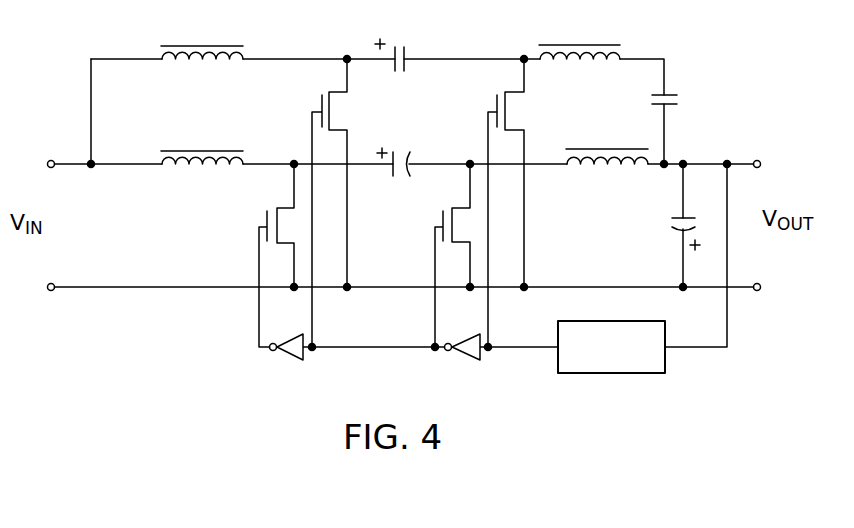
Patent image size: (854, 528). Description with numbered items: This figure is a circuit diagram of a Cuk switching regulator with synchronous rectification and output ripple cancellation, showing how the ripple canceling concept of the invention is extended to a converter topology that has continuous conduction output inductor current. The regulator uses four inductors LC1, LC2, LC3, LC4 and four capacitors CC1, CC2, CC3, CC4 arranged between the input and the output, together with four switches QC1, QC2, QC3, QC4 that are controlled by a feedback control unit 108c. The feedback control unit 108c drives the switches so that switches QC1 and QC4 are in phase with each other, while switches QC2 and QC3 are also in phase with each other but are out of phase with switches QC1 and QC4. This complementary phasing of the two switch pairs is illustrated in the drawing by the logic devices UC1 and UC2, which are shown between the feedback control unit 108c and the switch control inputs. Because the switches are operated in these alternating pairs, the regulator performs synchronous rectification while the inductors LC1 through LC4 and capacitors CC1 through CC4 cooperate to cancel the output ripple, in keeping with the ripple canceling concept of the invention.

The feedback control unit 108c is at (637, 318).
The inductor LC1 is at (202, 174).
The inductor LC2 is at (607, 173).
The inductor LC3 is at (202, 70).
The inductor LC4 is at (579, 69).
The capacitor CC1 is at (400, 178).
The capacitor CC2 is at (662, 225).
The capacitor CC3 is at (396, 71).
The capacitor CC4 is at (686, 102).
The switch QC1 is at (257, 255).
The switch QC2 is at (430, 255).
The switch QC3 is at (344, 203).
The switch QC4 is at (521, 203).
The logic device UC1 is at (502, 363).
The logic device UC2 is at (353, 363).